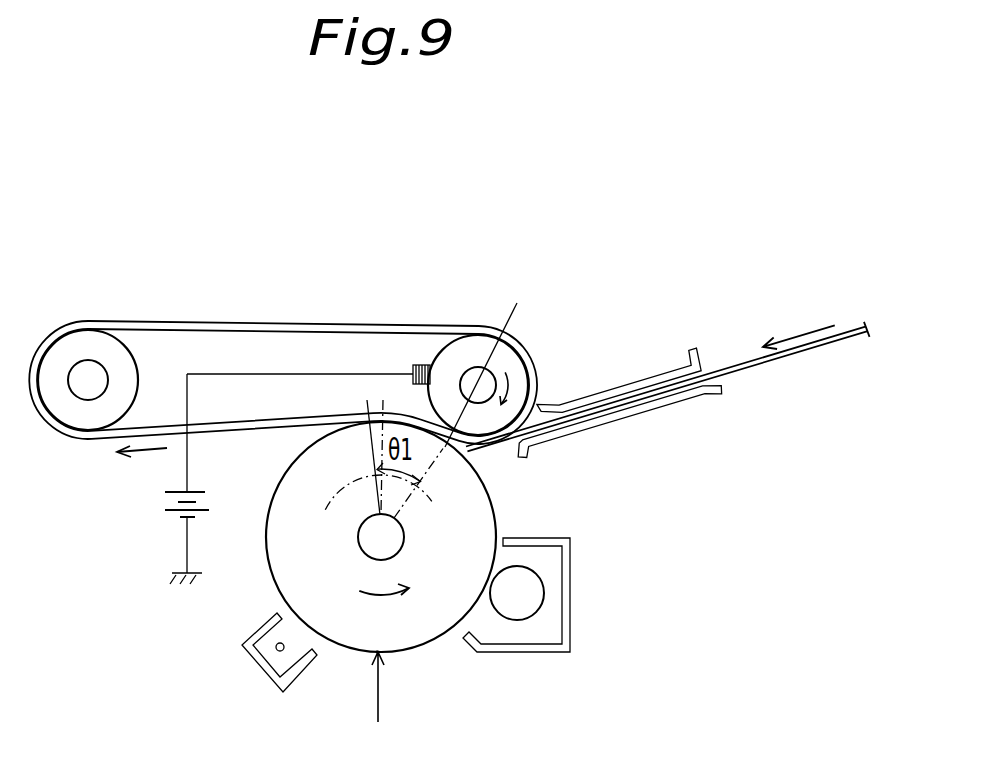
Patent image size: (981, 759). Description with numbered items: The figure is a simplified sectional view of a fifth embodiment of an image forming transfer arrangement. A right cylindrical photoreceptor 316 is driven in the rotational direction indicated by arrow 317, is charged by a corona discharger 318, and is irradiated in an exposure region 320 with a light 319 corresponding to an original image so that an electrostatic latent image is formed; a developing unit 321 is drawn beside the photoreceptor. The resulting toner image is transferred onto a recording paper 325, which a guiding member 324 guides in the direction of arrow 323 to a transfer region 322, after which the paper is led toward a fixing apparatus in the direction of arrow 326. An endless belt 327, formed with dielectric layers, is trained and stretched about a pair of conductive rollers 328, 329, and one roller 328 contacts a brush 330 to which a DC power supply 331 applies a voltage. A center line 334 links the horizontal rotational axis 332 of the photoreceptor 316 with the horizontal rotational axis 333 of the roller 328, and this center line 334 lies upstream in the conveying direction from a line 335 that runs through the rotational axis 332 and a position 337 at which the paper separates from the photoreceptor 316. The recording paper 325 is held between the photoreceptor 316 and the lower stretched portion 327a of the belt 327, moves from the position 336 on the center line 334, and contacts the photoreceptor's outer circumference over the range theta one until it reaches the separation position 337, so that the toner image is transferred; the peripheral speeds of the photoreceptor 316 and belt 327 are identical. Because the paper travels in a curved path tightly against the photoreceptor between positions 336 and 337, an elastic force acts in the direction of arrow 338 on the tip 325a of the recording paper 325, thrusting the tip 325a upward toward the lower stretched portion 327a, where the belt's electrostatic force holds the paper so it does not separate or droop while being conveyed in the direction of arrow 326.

The photoreceptor 316 is at (290, 580).
The arrow 317 is at (378, 601).
The corona discharger 318 is at (270, 668).
The light 319 is at (380, 703).
The exposure region 320 is at (377, 652).
The developing unit 321 is at (527, 593).
The transfer region 322 is at (413, 458).
The arrow 323 is at (800, 332).
The guiding member 324 is at (626, 410).
The recording paper 325 is at (807, 353).
The tip of the recording paper 325a is at (303, 404).
The arrow 326 is at (140, 452).
The endless belt 327 is at (213, 428).
The lower stretched portion of the belt 327a is at (220, 432).
The conductive roller 328 is at (470, 352).
The conductive roller 329 is at (84, 352).
The brush 330 is at (413, 370).
The DC power supply 331 is at (207, 493).
The rotational axis of the photoreceptor 332 is at (372, 548).
The rotational axis of the roller 333 is at (500, 357).
The center line 334 is at (425, 499).
The line 335 is at (357, 510).
The position 336 is at (452, 448).
The separation position 337 is at (366, 432).
The arrow 338 is at (276, 450).